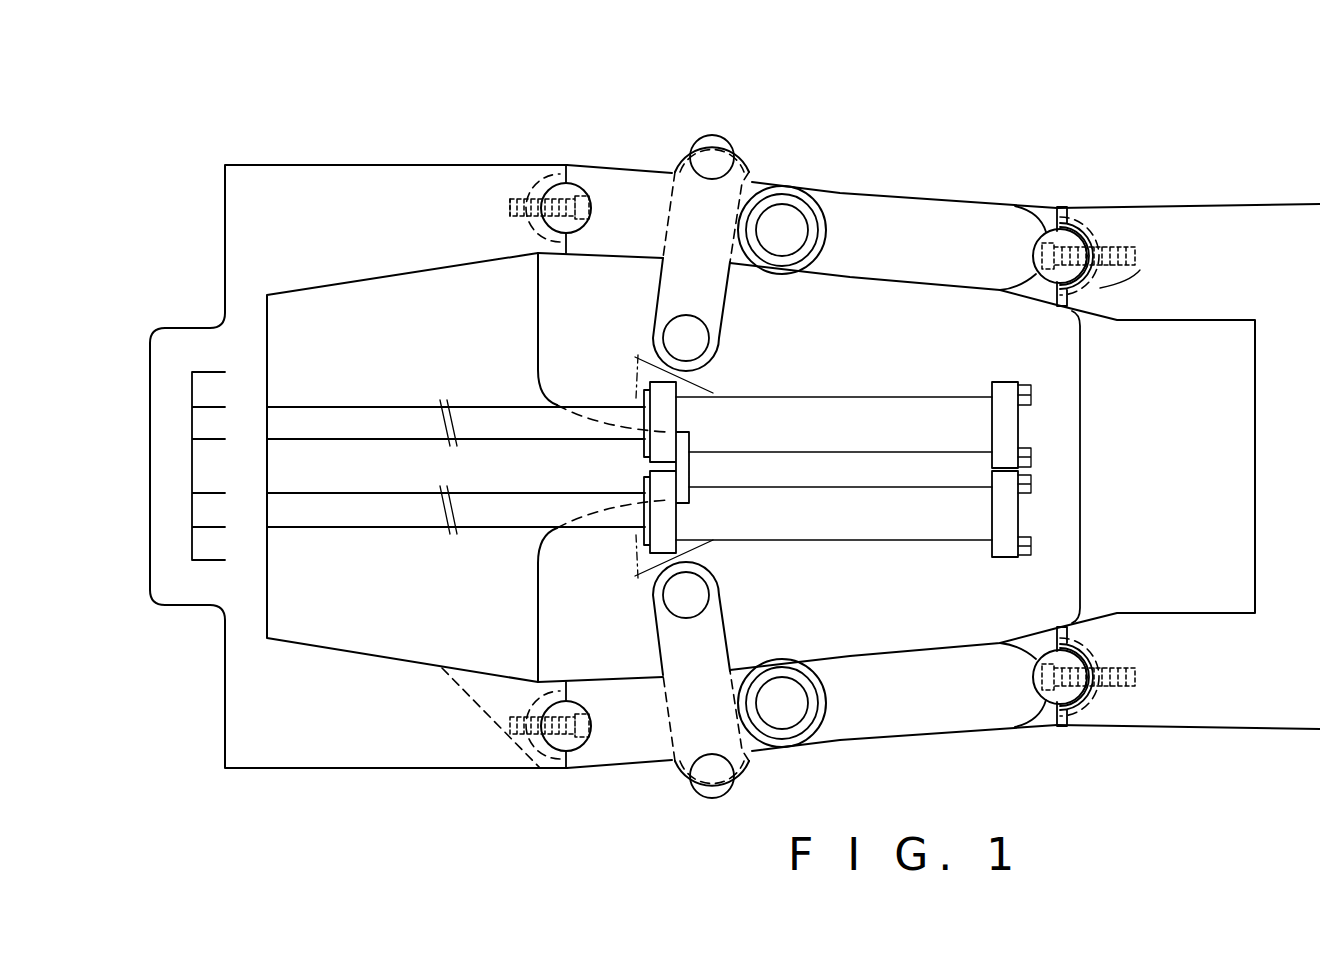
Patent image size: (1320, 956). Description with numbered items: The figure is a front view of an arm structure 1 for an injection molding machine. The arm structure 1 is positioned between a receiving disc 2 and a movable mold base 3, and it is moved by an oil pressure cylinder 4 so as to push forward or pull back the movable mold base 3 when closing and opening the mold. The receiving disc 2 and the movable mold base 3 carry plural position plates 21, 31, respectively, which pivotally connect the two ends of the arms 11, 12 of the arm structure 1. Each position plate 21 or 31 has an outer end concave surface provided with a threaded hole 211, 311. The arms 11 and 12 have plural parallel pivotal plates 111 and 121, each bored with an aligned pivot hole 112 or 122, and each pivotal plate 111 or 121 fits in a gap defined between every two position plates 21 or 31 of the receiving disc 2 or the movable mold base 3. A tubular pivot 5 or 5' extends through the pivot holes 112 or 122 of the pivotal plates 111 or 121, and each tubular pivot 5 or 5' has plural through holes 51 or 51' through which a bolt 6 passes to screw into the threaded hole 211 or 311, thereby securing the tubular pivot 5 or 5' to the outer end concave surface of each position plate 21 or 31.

The arm structure 1 is at (823, 172).
The receiving disc 2 is at (298, 188).
The movable mold base 3 is at (1223, 238).
The oil pressure cylinder 4 is at (313, 510).
The tubular pivot 5 is at (566, 520).
The tubular pivot 5' is at (1047, 513).
The bolt 6 is at (538, 197).
The arm 11 is at (607, 187).
The arm 12 is at (922, 223).
The position plate 21 is at (530, 165).
The through hole 51 is at (471, 428).
The through hole 51' is at (1162, 224).
The pivotal plate 111 is at (550, 177).
The pivot hole 112 is at (592, 223).
The pivotal plate 121 is at (1058, 217).
The pivot hole 122 is at (1032, 276).
The threaded hole 211 is at (517, 185).
The position plate 31 is at (1085, 213).
The threaded hole 311 is at (1117, 247).